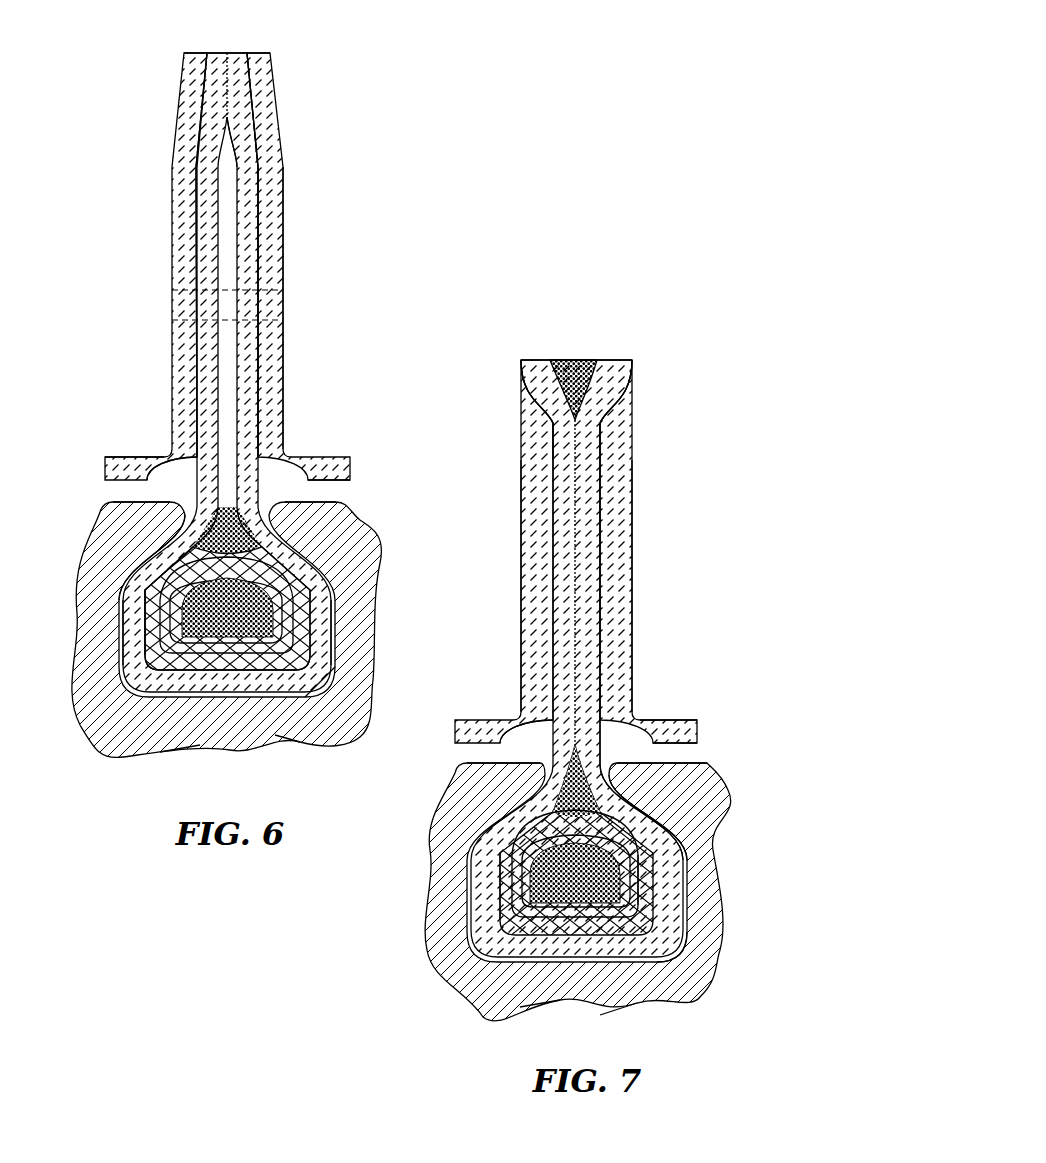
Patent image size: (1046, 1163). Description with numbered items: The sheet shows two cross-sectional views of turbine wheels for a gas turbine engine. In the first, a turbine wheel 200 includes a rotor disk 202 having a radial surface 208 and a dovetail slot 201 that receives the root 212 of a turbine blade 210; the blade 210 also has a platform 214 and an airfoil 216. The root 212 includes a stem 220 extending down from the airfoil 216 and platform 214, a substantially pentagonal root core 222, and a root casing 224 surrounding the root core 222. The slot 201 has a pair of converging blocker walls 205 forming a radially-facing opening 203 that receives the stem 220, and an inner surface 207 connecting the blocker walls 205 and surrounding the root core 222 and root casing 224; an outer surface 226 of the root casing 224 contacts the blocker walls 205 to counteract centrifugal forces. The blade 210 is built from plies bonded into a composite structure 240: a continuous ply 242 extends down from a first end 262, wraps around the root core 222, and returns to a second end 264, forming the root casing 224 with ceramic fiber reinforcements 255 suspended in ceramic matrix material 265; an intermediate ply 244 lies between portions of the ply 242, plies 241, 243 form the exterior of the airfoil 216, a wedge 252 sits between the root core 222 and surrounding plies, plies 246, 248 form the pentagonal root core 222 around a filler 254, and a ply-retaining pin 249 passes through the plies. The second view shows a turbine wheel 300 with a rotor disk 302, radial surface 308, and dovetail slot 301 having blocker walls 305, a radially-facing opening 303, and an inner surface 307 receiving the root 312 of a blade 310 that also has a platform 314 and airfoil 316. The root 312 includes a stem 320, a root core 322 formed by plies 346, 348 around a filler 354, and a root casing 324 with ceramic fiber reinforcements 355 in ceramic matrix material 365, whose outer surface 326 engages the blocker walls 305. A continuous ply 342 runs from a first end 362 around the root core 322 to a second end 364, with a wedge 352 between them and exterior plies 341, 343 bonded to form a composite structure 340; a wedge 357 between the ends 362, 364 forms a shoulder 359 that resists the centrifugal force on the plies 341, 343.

In FIG. 6, the turbine wheel 200 is at (405, 140).
In FIG. 6, the dovetail slot 201 is at (298, 700).
In FIG. 6, the rotor disk 202 is at (400, 558).
In FIG. 6, the radially-facing opening 203 is at (295, 456).
In FIG. 6, the blocker walls 205 is at (167, 513).
In FIG. 6, the inner surface 207 is at (190, 744).
In FIG. 6, the radial surface 208 is at (335, 500).
In FIG. 6, the turbine blade 210 is at (300, 192).
In FIG. 6, the root 212 is at (82, 483).
In FIG. 6, the platform 214 is at (113, 452).
In FIG. 6, the airfoil 216 is at (152, 183).
In FIG. 6, the stem 220 is at (183, 490).
In FIG. 6, the root core 222 is at (141, 608).
In FIG. 6, the root casing 224 is at (342, 660).
In FIG. 6, the outer surface 226 is at (340, 692).
In FIG. 6, the composite structure 240 is at (345, 272).
In FIG. 6, the ply 241 is at (178, 223).
In FIG. 6, the ply 242 is at (240, 368).
In FIG. 6, the ply 243 is at (282, 202).
In FIG. 6, the intermediate ply 244 is at (228, 362).
In FIG. 6, the ply 246 is at (141, 596).
In FIG. 6, the ply 248 is at (165, 580).
In FIG. 6, the ply-retaining pin 249 is at (258, 300).
In FIG. 6, the wedge 252 is at (215, 535).
In FIG. 6, the filler 254 is at (213, 605).
In FIG. 6, the ceramic fiber reinforcements 255 is at (308, 602).
In FIG. 6, the first end 262 is at (218, 72).
In FIG. 6, the second end 264 is at (238, 72).
In FIG. 6, the ceramic matrix material 265 is at (308, 631).
In FIG. 7, the turbine wheel 300 is at (690, 350).
In FIG. 7, the dovetail slot 301 is at (637, 967).
In FIG. 7, the rotor disk 302 is at (755, 910).
In FIG. 7, the radially-facing opening 303 is at (648, 742).
In FIG. 7, the blocker walls 305 is at (507, 770).
In FIG. 7, the inner surface 307 is at (550, 967).
In FIG. 7, the radial surface 308 is at (688, 763).
In FIG. 7, the turbine blade 310 is at (665, 443).
In FIG. 7, the root 312 is at (730, 770).
In FIG. 7, the platform 314 is at (690, 705).
In FIG. 7, the airfoil 316 is at (715, 498).
In FIG. 7, the stem 320 is at (513, 751).
In FIG. 7, the root core 322 is at (487, 898).
In FIG. 7, the root casing 324 is at (677, 832).
In FIG. 7, the outer surface 326 is at (650, 898).
In FIG. 7, the composite structure 340 is at (683, 530).
In FIG. 7, the ply 341 is at (535, 577).
In FIG. 7, the ply 342 is at (590, 596).
In FIG. 7, the ply 343 is at (614, 538).
In FIG. 7, the ply 346 is at (487, 872).
In FIG. 7, the ply 348 is at (508, 856).
In FIG. 7, the wedge 352 is at (572, 802).
In FIG. 7, the filler 354 is at (658, 900).
In FIG. 7, the ceramic fiber reinforcements 355 is at (655, 927).
In FIG. 7, the wedge 357 is at (575, 378).
In FIG. 7, the shoulder 359 is at (547, 413).
In FIG. 7, the first end 362 is at (545, 377).
In FIG. 7, the second end 364 is at (607, 375).
In FIG. 7, the ceramic matrix material 365 is at (655, 915).